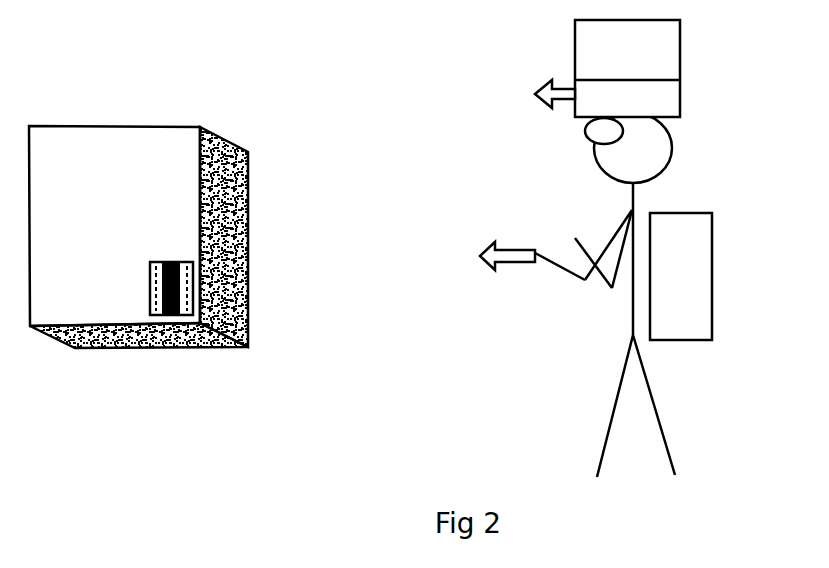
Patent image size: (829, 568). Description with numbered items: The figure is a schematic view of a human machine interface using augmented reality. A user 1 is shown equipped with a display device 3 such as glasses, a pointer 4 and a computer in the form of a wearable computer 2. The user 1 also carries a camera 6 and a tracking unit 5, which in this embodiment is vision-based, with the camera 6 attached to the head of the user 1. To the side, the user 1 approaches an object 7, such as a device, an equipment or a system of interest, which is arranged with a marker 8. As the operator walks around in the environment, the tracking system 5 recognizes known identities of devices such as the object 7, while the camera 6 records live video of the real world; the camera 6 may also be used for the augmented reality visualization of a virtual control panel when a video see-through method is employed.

The user 1 is at (678, 167).
The wearable computer 2 is at (698, 340).
The display device 3 is at (578, 140).
The pointer 4 is at (480, 263).
The tracking unit 5 is at (687, 40).
The camera 6 is at (542, 80).
The object 7 is at (255, 310).
The marker 8 is at (140, 288).